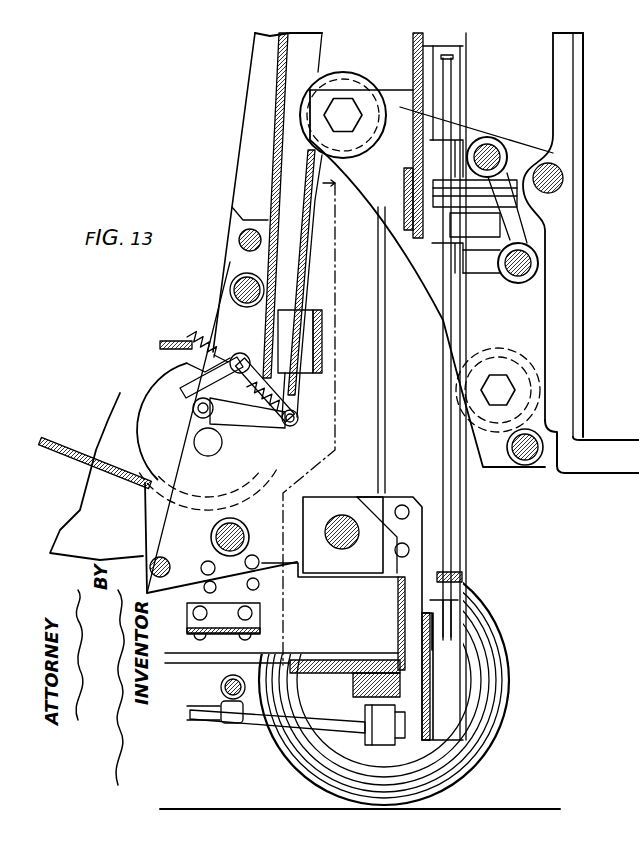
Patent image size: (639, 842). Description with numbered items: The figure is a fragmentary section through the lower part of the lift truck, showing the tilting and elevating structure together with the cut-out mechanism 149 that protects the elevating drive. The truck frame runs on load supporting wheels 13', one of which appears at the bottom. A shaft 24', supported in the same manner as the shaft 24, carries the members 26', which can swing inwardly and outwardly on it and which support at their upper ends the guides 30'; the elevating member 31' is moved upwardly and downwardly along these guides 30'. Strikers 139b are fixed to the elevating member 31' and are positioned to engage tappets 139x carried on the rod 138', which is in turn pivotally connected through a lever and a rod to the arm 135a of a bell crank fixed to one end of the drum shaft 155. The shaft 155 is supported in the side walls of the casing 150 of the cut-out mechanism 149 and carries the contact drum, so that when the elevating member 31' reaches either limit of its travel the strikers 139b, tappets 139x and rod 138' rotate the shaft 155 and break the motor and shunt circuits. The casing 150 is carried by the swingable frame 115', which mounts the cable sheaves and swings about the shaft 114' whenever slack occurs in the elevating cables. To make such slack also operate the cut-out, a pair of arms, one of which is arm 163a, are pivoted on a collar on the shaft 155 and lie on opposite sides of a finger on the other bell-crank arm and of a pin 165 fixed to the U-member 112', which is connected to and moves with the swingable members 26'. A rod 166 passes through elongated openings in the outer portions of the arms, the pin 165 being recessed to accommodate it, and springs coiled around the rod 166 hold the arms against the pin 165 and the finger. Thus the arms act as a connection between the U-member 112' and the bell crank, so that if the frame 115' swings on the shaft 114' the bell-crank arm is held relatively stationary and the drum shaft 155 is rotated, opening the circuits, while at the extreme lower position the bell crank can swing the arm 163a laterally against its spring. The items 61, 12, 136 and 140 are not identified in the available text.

The swingable members 26' is at (263, 205).
The guides 30' is at (454, 385).
The rod 138' is at (473, 347).
The strikers 139b is at (462, 126).
The elevating member 31' is at (570, 235).
The foot 61 is at (592, 446).
The axis / shaft 12 is at (296, 454).
The slide rod 136 is at (313, 283).
The U-member 112' is at (227, 257).
The arm 163a is at (205, 325).
The rod 166 is at (190, 333).
The pin 165 is at (240, 357).
The cut-out mechanism 149 is at (126, 429).
The casing 150 is at (166, 401).
The shaft 155 is at (199, 451).
The arm of the bell crank 135a is at (287, 428).
The swingable frame 115' is at (252, 427).
The shaft 24' is at (205, 537).
The shaft 114' is at (205, 591).
The tappets 139x is at (458, 573).
The shaft 24 is at (628, 573).
The plate 140 is at (432, 692).
The load supporting wheels 13' is at (382, 680).